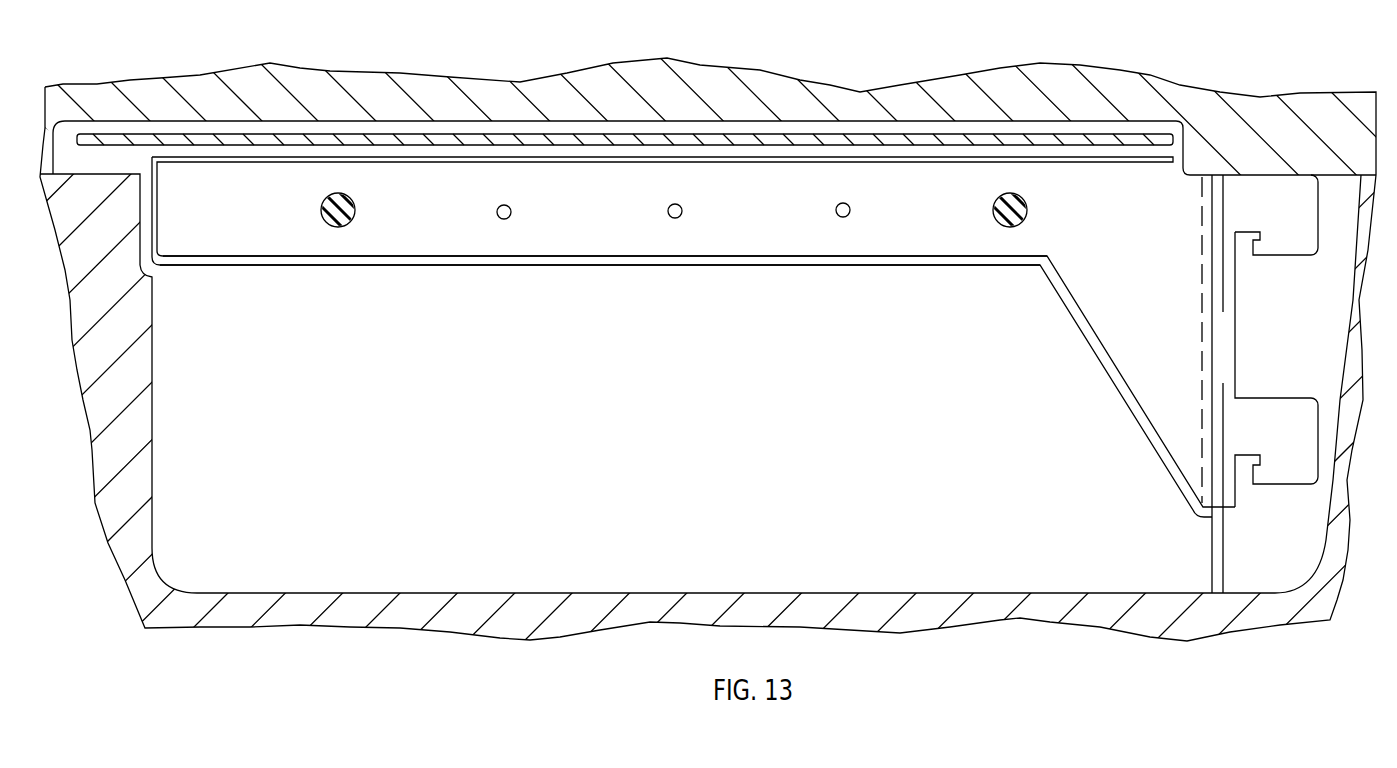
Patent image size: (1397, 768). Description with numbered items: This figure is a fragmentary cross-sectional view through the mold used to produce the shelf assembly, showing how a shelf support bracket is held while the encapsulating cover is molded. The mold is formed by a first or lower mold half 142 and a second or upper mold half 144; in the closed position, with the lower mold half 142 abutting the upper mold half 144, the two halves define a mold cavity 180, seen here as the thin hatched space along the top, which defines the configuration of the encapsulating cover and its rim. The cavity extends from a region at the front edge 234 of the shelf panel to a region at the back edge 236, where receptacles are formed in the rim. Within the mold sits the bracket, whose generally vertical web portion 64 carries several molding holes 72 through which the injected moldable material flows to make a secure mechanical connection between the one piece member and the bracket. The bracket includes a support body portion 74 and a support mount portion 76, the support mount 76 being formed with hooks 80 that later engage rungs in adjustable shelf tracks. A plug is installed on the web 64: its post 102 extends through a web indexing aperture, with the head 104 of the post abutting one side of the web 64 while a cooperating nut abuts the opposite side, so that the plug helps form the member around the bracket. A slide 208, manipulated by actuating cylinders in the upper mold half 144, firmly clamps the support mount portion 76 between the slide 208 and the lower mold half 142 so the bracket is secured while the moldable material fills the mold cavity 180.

The web portion 64 is at (693, 337).
The molding holes 72 is at (667, 210).
The support body portion 74 is at (872, 240).
The support mount portion 76 is at (1220, 339).
The hooks 80 is at (1280, 408).
The post 102 is at (352, 198).
The head 104 is at (1028, 207).
The first or lower mold half 142 is at (1037, 608).
The second or upper mold half 144 is at (1128, 80).
The mold cavity 180 is at (858, 124).
The slide 208 is at (1265, 530).
The front edge 234 is at (64, 122).
The back edge 236 is at (1172, 137).